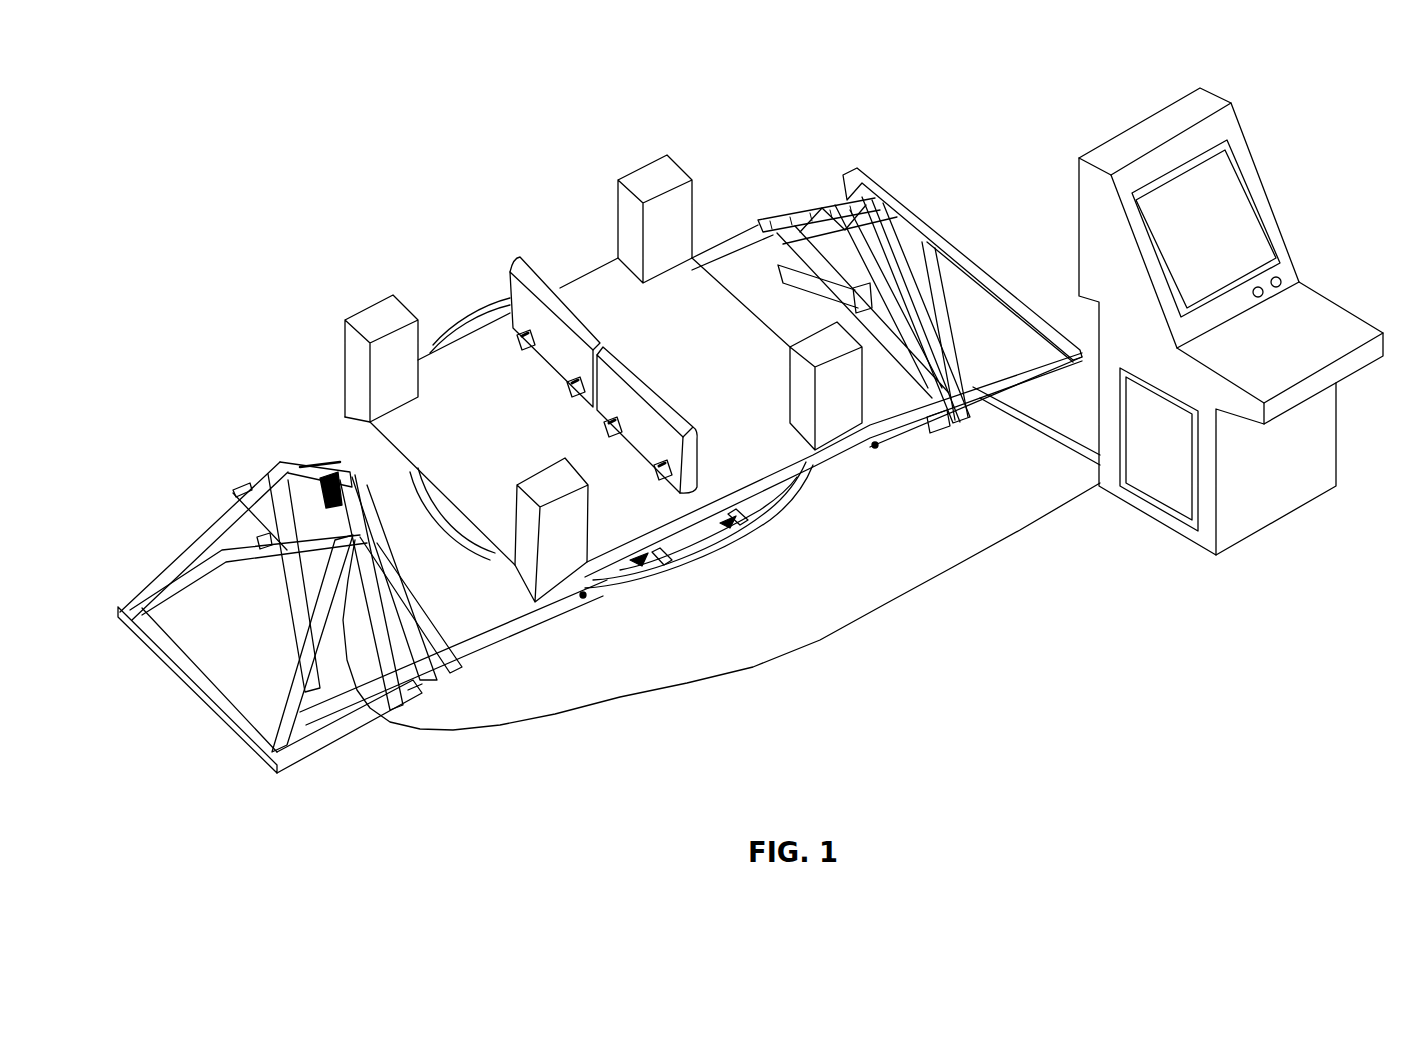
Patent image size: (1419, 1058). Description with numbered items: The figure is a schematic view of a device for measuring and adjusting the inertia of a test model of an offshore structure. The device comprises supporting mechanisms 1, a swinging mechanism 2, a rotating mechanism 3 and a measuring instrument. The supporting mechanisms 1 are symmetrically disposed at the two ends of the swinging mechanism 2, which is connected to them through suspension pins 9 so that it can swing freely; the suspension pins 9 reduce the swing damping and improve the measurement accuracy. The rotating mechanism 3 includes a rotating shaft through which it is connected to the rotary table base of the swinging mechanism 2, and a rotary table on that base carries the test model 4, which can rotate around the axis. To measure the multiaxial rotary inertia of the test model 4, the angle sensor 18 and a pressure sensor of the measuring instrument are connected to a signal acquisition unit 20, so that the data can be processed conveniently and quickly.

The supporting mechanism 1 is at (600, 463).
The swinging mechanism 2 is at (528, 685).
The rotating mechanism 3 is at (810, 542).
The test model 4 is at (505, 400).
The suspension pin 9 is at (330, 477).
The angle sensor 18 is at (815, 230).
The signal acquisition unit 20 is at (1289, 325).